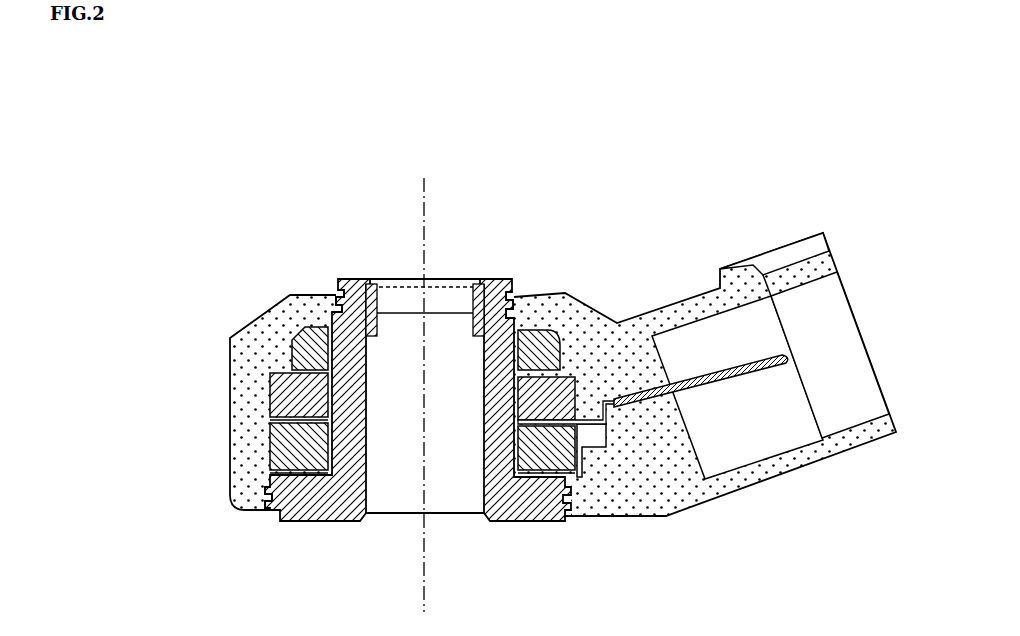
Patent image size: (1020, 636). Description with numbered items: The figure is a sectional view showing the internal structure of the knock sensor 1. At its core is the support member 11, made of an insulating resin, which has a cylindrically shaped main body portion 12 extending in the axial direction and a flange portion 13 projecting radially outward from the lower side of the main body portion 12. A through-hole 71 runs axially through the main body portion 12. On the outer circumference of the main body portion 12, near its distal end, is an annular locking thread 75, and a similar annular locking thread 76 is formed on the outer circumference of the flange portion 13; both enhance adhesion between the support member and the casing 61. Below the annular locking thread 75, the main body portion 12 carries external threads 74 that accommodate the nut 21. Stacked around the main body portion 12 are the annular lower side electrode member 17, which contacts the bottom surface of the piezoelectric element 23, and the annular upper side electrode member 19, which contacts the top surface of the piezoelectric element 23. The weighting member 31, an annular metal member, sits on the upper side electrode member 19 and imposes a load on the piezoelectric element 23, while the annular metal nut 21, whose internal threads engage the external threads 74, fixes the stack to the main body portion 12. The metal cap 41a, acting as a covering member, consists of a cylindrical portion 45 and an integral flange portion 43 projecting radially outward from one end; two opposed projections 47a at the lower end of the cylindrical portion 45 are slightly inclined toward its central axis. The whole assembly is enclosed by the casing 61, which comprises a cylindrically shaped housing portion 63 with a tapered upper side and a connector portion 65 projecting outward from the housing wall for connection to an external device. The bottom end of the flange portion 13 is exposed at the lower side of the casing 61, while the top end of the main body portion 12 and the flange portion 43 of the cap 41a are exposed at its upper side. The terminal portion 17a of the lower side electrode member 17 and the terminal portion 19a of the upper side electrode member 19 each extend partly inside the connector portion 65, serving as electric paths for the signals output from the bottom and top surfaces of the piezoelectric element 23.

The knock sensor 1 is at (570, 130).
The support member 11 is at (455, 600).
The main body portion 12 is at (485, 430).
The flange portion 13 is at (515, 500).
The lower side electrode member 17 is at (268, 472).
The terminal portion 17a is at (608, 415).
The upper side electrode member 19 is at (268, 417).
The terminal portion 19a is at (606, 400).
The nut 21 is at (280, 302).
The piezoelectric element 23 is at (277, 445).
The weighting member 31 is at (285, 378).
The cap 41a is at (449, 278).
The flange portion 43 is at (338, 280).
The cylindrical portion 45 is at (377, 297).
The projection 47a is at (375, 336).
The casing 61 is at (735, 115).
The housing portion 63 is at (532, 297).
The connector portion 65 is at (707, 300).
The through-hole 71 is at (367, 483).
The external thread 74 is at (317, 323).
The annular locking thread 75 is at (336, 322).
The annular locking thread 76 is at (270, 500).